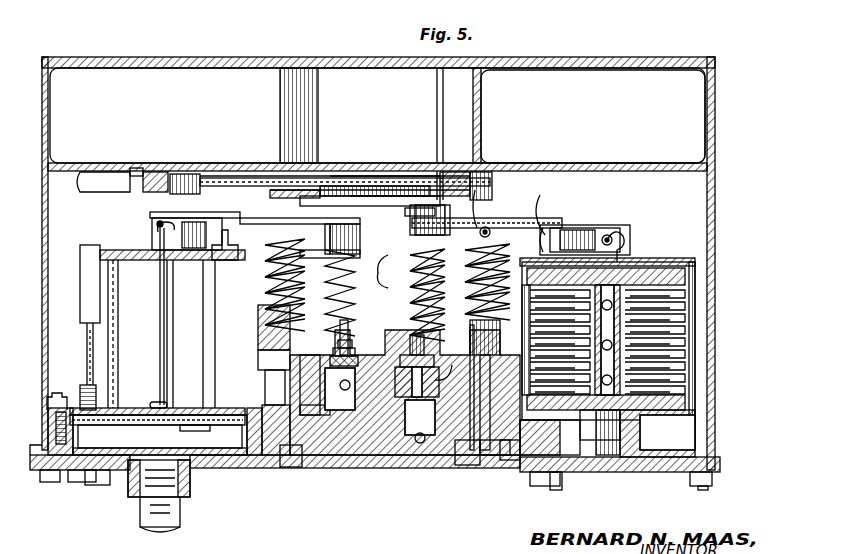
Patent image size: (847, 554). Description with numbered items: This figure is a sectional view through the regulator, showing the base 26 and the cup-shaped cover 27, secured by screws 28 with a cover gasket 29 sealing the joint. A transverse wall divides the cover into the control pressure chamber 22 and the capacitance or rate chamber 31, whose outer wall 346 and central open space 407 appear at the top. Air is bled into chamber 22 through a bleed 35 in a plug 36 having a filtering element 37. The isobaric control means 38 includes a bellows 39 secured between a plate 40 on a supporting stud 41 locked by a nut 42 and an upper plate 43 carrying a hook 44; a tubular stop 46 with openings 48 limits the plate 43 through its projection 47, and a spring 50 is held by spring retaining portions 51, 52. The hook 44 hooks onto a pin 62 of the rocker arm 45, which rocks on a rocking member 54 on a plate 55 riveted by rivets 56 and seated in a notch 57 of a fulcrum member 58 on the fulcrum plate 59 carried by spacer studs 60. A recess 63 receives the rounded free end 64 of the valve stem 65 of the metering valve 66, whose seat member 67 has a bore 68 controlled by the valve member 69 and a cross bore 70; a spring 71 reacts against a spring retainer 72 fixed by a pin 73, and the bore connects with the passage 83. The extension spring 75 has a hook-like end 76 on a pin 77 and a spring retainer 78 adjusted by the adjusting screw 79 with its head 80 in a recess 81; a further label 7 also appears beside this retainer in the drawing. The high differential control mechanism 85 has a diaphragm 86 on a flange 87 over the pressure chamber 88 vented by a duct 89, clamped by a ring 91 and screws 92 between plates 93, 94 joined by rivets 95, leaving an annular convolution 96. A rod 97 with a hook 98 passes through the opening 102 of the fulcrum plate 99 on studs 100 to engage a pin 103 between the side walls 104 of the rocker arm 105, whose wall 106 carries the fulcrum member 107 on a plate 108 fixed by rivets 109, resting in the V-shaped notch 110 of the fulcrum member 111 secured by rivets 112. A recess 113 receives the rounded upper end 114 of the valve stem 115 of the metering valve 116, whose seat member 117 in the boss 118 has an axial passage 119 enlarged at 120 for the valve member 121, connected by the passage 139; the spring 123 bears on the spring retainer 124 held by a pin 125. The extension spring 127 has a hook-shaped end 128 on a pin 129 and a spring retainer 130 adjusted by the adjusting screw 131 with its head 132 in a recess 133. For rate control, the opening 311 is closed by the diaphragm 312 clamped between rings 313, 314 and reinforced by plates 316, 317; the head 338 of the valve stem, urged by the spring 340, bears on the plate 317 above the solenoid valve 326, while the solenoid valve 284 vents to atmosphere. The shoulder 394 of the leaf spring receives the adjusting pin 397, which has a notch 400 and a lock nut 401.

The cover 27 is at (42, 277).
The capacitance or rate chamber 31 is at (593, 116).
The outer wall 346 is at (482, 80).
The open space 407 is at (408, 78).
The opening 311 is at (218, 117).
The ring 314 is at (85, 175).
The wall 106 is at (150, 175).
The rivets 109 is at (190, 180).
The fulcrum member 107 is at (240, 178).
The plate 108 is at (255, 178).
The hook-shaped end 128 is at (268, 176).
The head 338 is at (300, 180).
The spring 340 is at (320, 186).
The plate 317 is at (362, 176).
The plate 316 is at (375, 196).
The pin 129 is at (335, 190).
The rounded free end 64 is at (430, 176).
The diaphragm 312 is at (438, 172).
The ring 313 is at (463, 171).
The pin 77 is at (498, 172).
The pin 103 is at (190, 212).
The hook 98 is at (157, 224).
The side walls 104 is at (240, 228).
The rivets 112 is at (158, 240).
The V-shaped notch 110 is at (230, 236).
The fulcrum member 111 is at (218, 260).
The high differential control mechanism 85 is at (75, 258).
The shoulder 394 is at (70, 330).
The adjusting pin 397 is at (88, 348).
The fulcrum plate 99 is at (127, 334).
The opening 102 is at (205, 262).
The studs 100 is at (118, 347).
The rod 97 is at (168, 372).
The diaphragm 86 is at (100, 432).
The plate 93 is at (140, 430).
The annular convolution 96 is at (232, 430).
The plate 94 is at (132, 410).
The rivets 95 is at (172, 403).
The screws 92 is at (50, 395).
The ring 91 is at (48, 412).
The flange 87 is at (50, 432).
The cover gasket 29 is at (34, 459).
The screws 28 is at (42, 482).
The notch 400 is at (80, 482).
The lock nut 401 is at (92, 485).
The duct 89 is at (140, 512).
The pressure chamber 88 is at (210, 470).
The base 26 is at (238, 470).
The spring retainer 124 is at (268, 264).
The extension spring 127 is at (268, 284).
The pin 73 is at (354, 293).
The rocker arm 105 is at (300, 202).
The recess 113 is at (356, 222).
The rounded upper end 114 is at (360, 224).
The pin 125 is at (358, 244).
The spring 123 is at (358, 258).
The solenoid valve 284 is at (398, 275).
The solenoid valve 326 is at (268, 308).
The spring retainer 130 is at (268, 352).
The metering valve 116 is at (265, 374).
The adjusting screw 131 is at (262, 405).
The valve member 69 is at (395, 447).
The boss 118 is at (318, 385).
The axial passage 119 is at (318, 387).
The adjusting head 132 is at (346, 397).
The passage 139 is at (360, 452).
The recess 133 is at (292, 470).
The valve stem 115 is at (355, 324).
The enlarged portion 120 is at (355, 342).
The valve member 121 is at (356, 352).
The seat member 117 is at (358, 364).
The metering valve 66 is at (405, 387).
The seat member 67 is at (405, 397).
The cross bore 70 is at (405, 402).
The passage 83 is at (420, 445).
The adjusting screw 79 is at (455, 452).
The bore 68 is at (448, 402).
The spring 71 is at (437, 298).
The valve stem 65 is at (436, 322).
The fulcrum member 58 is at (496, 282).
The extension spring 75 is at (500, 332).
The spring retainer 78 is at (490, 364).
The rod 7 is at (498, 387).
The adjusting head 80 is at (470, 470).
The recess 81 is at (510, 470).
The spacer studs 60 is at (526, 422).
The spring retainer 72 is at (430, 221).
The notch 57 is at (548, 232).
The recess 63 is at (430, 218).
The hook-like end 76 is at (480, 202).
The rocker arm 45 is at (490, 228).
The plate 55 is at (548, 204).
The rocking member 54 is at (552, 230).
The rivets 56 is at (568, 224).
The pin 62 is at (612, 238).
The hook 44 is at (618, 248).
The control pressure chamber 22 is at (622, 197).
The fulcrum plate 59 is at (622, 264).
The isobaric control means 38 is at (700, 338).
The plate 43 is at (650, 272).
The spring retaining portion 52 is at (615, 292).
The bellows 39 is at (660, 312).
The projection 47 is at (640, 302).
The spring 50 is at (640, 310).
The tubular stop 46 is at (685, 370).
The openings 48 is at (685, 394).
The plate 40 is at (590, 412).
The spring retaining portion 51 is at (620, 417).
The supporting stud 41 is at (625, 422).
The nut 42 is at (575, 438).
The plug 36 is at (552, 484).
The bleed 35 is at (568, 490).
The filtering element 37 is at (566, 478).